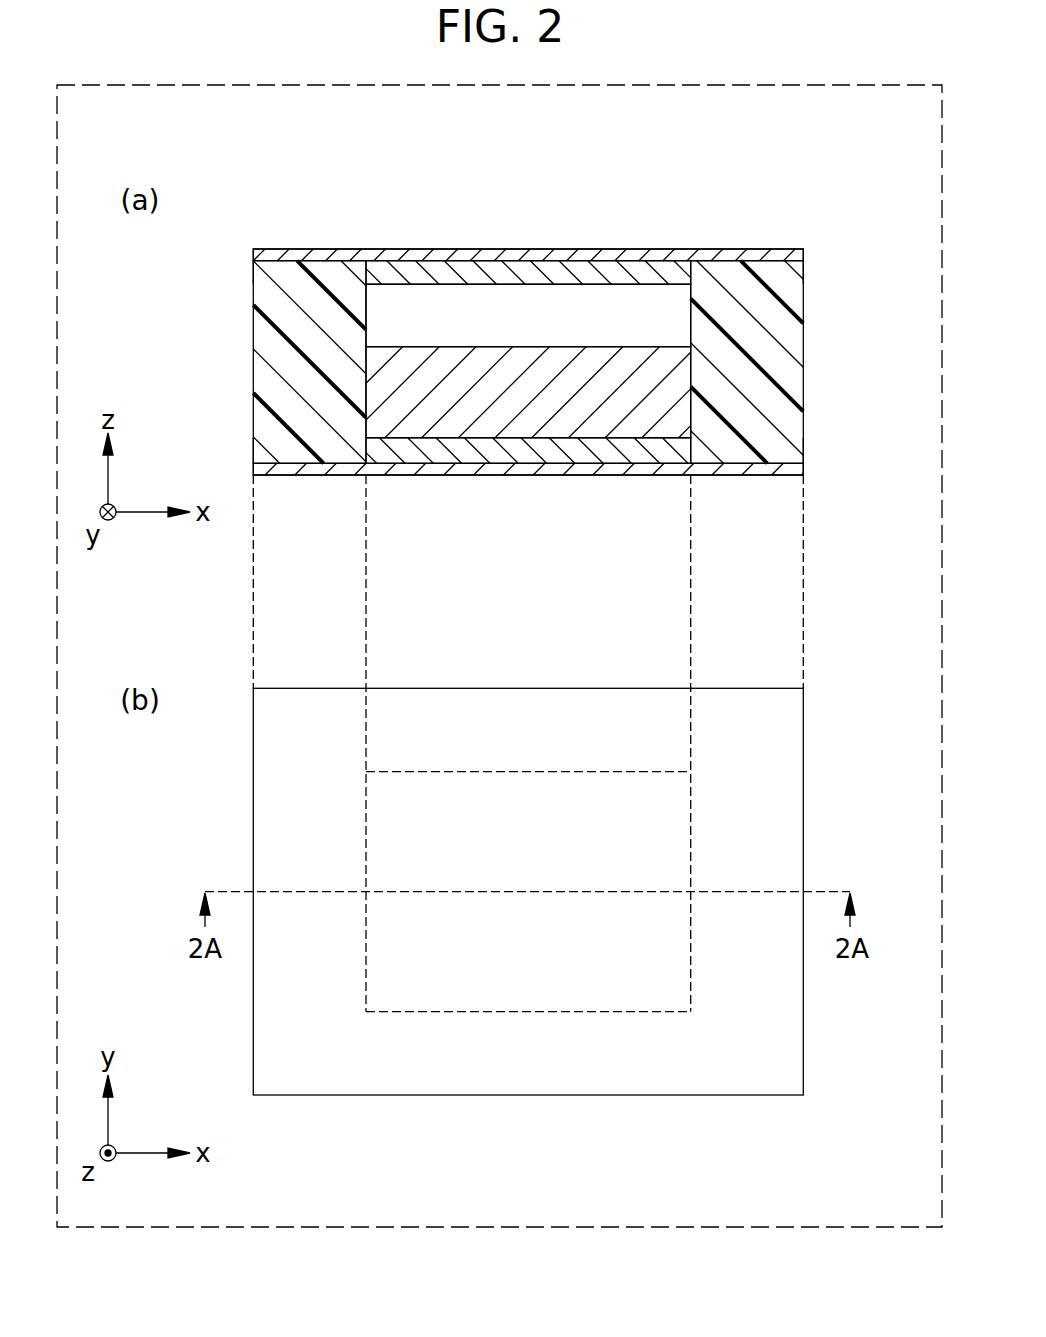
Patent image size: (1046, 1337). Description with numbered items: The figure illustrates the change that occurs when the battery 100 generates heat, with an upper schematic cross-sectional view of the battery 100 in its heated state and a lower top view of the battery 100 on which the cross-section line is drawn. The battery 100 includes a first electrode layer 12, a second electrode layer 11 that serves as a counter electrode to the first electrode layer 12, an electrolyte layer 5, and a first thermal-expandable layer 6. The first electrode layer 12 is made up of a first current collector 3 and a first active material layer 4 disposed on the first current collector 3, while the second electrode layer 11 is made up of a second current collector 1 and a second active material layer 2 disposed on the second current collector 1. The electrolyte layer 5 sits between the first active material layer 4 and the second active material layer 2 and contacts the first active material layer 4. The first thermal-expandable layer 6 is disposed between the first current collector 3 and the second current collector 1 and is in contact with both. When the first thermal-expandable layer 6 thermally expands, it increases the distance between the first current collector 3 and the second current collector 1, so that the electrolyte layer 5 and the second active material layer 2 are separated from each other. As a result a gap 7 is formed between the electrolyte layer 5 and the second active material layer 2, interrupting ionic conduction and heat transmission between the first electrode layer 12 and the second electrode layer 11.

The second current collector 1 is at (808, 252).
The second active material layer 2 is at (680, 274).
The first current collector 3 is at (788, 468).
The first active material layer 4 is at (678, 450).
The electrolyte layer 5 is at (668, 395).
The first thermal-expandable layer 6 is at (267, 297).
The gap 7 is at (665, 326).
The second electrode layer 11 is at (866, 202).
The first electrode layer 12 is at (866, 425).
The battery 100 is at (745, 168).